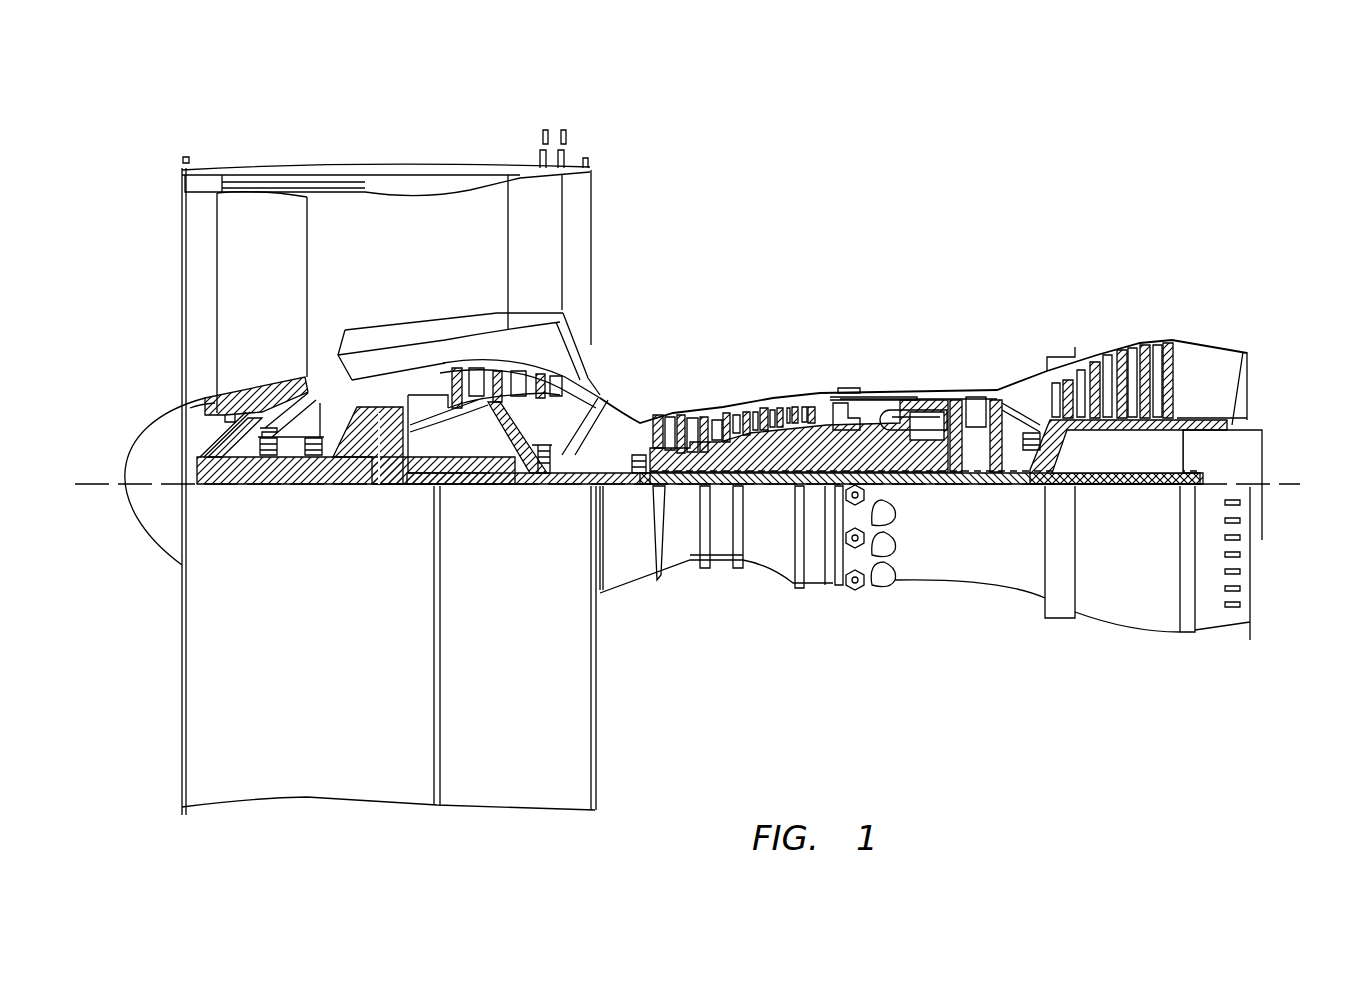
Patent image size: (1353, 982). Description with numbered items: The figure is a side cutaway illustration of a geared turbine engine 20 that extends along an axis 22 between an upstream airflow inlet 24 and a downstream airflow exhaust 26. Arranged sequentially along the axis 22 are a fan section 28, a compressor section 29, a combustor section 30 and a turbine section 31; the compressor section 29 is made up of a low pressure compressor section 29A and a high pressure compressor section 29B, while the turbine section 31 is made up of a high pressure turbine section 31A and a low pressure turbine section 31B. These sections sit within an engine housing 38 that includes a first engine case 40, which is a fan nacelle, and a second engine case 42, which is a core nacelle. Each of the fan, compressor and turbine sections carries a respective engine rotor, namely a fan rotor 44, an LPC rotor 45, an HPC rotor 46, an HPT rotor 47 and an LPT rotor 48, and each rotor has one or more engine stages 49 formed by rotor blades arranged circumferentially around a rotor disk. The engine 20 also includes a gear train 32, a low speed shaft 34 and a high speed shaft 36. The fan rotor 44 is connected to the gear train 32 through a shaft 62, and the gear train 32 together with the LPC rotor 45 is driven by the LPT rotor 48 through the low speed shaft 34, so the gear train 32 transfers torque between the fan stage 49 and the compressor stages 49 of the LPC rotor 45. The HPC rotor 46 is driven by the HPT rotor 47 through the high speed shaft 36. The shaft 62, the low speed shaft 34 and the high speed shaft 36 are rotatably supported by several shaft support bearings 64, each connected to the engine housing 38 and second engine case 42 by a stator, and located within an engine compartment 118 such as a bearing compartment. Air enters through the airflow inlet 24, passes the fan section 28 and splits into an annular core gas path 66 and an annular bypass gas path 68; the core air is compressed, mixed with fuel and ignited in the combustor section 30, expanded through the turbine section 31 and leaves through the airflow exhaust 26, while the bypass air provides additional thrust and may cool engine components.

The geared turbine engine 20 is at (134, 132).
The axis 22 is at (1292, 470).
The airflow inlet 24 is at (182, 212).
The airflow exhaust 26 is at (1255, 388).
The fan section 28 is at (352, 142).
The compressor section 29 is at (428, 77).
The low pressure compressor section 29A is at (595, 132).
The high pressure compressor section 29B is at (620, 306).
The combustor section 30 is at (945, 309).
The turbine section 31 is at (950, 239).
The high pressure turbine section 31A is at (950, 309).
The low pressure turbine section 31B is at (1042, 309).
The gear train 32 is at (388, 490).
The low speed shaft 34 is at (1130, 488).
The high speed shaft 36 is at (905, 490).
The engine housing 38 is at (622, 632).
The first engine case 40 is at (520, 815).
The second engine case 42 is at (820, 585).
The fan rotor 44 is at (200, 402).
The low pressure compressor rotor 45 is at (497, 410).
The high pressure compressor rotor 46 is at (768, 450).
The high pressure turbine rotor 47 is at (975, 480).
The low pressure turbine rotor 48 is at (1123, 428).
The engine stage 49 is at (208, 423).
The shaft 62 is at (222, 490).
The shaft support bearing 64 is at (272, 460).
The core gas path 66 is at (615, 405).
The bypass gas path 68 is at (386, 270).
The engine compartment 118 is at (332, 440).